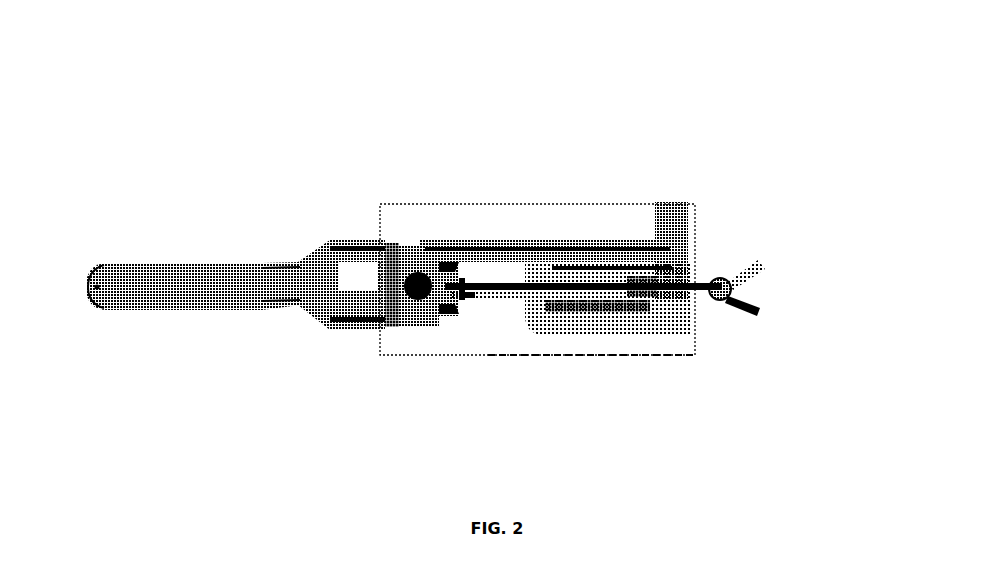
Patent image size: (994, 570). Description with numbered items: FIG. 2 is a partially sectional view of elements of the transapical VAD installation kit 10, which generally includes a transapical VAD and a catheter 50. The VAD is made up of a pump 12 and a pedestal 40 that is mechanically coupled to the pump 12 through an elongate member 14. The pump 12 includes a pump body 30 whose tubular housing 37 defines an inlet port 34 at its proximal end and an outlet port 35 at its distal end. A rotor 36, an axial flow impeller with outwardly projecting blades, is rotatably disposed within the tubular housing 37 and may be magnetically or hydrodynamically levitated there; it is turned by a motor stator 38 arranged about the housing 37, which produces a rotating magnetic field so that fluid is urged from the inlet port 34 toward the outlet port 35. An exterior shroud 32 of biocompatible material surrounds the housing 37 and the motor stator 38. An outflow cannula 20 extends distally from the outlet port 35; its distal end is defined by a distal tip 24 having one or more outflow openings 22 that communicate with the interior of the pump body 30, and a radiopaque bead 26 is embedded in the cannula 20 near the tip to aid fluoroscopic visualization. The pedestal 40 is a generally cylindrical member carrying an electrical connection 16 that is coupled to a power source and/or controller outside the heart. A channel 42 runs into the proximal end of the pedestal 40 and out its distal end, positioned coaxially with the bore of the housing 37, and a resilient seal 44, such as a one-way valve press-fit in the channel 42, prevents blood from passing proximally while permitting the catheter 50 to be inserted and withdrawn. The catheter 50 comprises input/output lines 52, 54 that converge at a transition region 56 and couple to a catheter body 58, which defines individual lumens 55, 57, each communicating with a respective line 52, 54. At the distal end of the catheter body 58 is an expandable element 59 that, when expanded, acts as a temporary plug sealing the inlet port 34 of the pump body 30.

The transapical VAD installation kit 10 is at (47, 53).
The pump 12 is at (188, 140).
The elongate member 14 is at (478, 248).
The electrical connection 16 is at (678, 202).
The outflow cannula 20 is at (144, 290).
The outflow openings 22 is at (112, 296).
The distal tip 24 is at (87, 288).
The radiopaque bead 26 is at (96, 291).
The pump body 30 is at (364, 280).
The exterior shroud 32 is at (352, 333).
The inlet port 34 is at (462, 302).
The outlet port 35 is at (262, 303).
The rotor 36 is at (392, 300).
The tubular housing 37 is at (406, 302).
The motor stator 38 is at (393, 246).
The pedestal 40 is at (610, 345).
The channel 42 is at (684, 296).
The resilient seal 44 is at (645, 300).
The catheter 50 is at (771, 266).
The input/output line 52 is at (762, 272).
The input/output line 54 is at (760, 298).
The lumen 55 is at (498, 248).
The transition region 56 is at (718, 277).
The lumen 57 is at (520, 300).
The catheter body 58 is at (482, 300).
The expandable element 59 is at (470, 300).